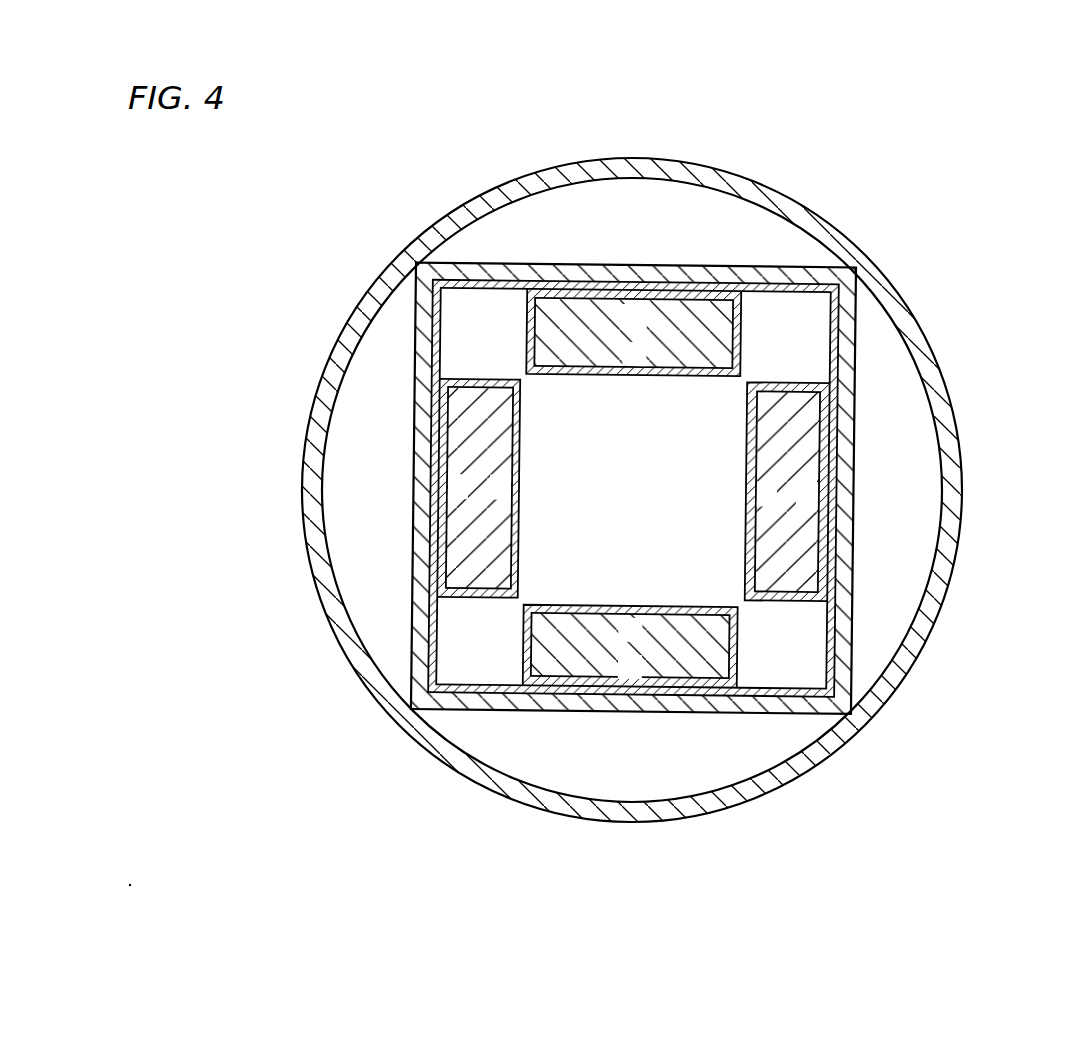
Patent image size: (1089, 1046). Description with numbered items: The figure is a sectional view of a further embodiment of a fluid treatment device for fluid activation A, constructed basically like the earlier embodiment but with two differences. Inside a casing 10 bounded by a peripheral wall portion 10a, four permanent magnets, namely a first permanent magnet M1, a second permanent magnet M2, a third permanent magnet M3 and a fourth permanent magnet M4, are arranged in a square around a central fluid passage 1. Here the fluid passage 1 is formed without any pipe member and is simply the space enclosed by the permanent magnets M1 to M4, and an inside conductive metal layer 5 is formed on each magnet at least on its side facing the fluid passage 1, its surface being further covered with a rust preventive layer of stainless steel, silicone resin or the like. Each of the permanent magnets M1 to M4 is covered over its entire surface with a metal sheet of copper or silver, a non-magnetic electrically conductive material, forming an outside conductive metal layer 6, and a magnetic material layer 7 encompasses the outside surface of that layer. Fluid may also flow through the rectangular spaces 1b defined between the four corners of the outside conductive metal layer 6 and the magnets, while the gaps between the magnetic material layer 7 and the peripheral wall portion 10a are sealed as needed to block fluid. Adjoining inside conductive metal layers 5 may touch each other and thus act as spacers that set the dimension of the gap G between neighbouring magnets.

The fluid treatment device for fluid activation A is at (789, 146).
The fluid passage 1 is at (646, 476).
The rectangular spaces 1b is at (803, 310).
The inside conductive metal layer 5 is at (632, 376).
The outside conductive metal layer 6 is at (828, 323).
The magnetic material layer 7 is at (843, 272).
The casing 10 is at (970, 561).
The peripheral wall portion 10a is at (930, 620).
The first permanent magnet M1 is at (563, 318).
The second permanent magnet M2 is at (466, 419).
The third permanent magnet M3 is at (697, 660).
The fourth permanent magnet M4 is at (795, 429).
The gap G is at (520, 377).